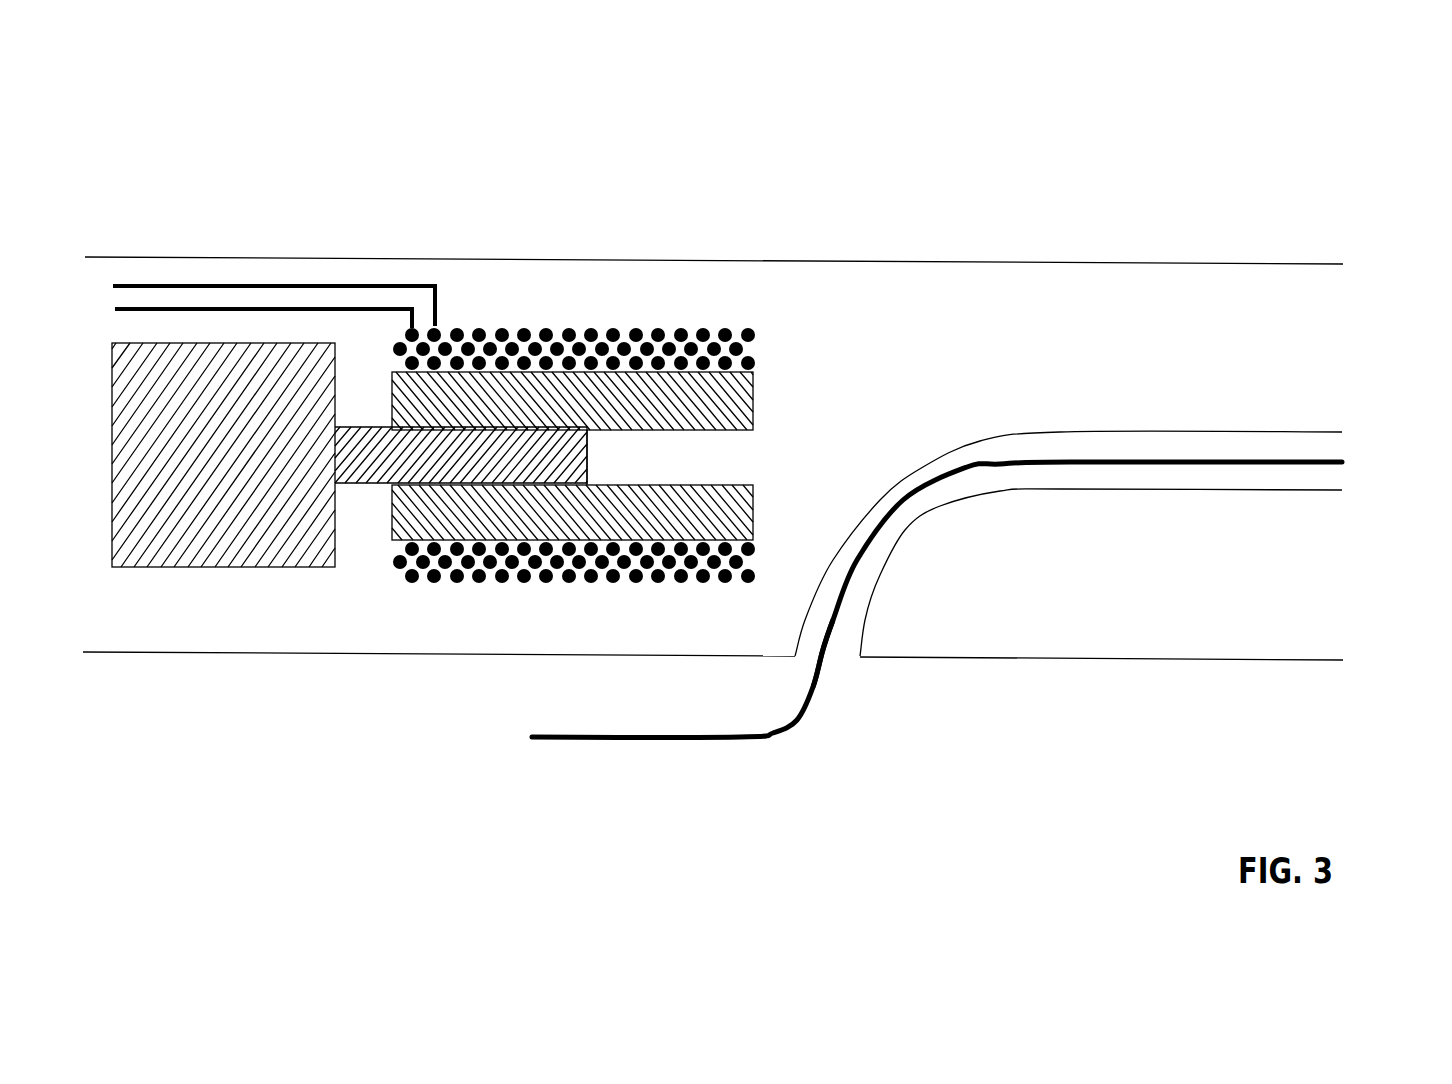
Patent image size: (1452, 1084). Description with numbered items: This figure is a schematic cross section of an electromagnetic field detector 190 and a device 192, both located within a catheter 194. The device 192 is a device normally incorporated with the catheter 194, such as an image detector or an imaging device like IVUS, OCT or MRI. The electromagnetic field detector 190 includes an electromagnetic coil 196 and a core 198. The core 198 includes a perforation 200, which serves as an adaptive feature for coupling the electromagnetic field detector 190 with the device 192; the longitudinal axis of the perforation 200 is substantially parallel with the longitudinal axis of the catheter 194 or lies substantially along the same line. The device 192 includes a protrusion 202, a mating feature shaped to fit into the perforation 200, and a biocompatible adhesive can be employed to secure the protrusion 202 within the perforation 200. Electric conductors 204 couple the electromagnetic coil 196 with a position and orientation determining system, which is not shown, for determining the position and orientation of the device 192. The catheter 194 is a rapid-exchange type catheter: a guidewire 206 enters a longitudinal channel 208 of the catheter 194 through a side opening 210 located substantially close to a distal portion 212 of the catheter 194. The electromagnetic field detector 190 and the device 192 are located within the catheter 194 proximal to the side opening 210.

The electromagnetic field detector 190 is at (565, 215).
The device 192 is at (198, 568).
The catheter 194 is at (1180, 262).
The electromagnetic coil 196 is at (703, 330).
The core 198 is at (753, 512).
The perforation 200 is at (743, 460).
The protrusion 202 is at (360, 487).
The electric conductors 204 is at (222, 307).
The guidewire 206 is at (680, 743).
The longitudinal channel 208 is at (1343, 450).
The side opening 210 is at (840, 657).
The distal portion 212 is at (1165, 170).